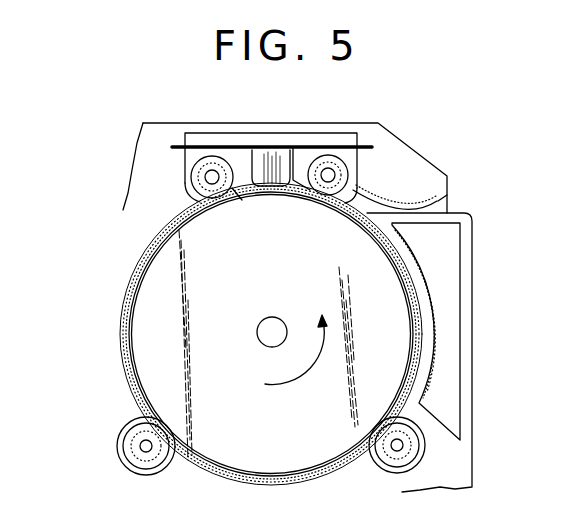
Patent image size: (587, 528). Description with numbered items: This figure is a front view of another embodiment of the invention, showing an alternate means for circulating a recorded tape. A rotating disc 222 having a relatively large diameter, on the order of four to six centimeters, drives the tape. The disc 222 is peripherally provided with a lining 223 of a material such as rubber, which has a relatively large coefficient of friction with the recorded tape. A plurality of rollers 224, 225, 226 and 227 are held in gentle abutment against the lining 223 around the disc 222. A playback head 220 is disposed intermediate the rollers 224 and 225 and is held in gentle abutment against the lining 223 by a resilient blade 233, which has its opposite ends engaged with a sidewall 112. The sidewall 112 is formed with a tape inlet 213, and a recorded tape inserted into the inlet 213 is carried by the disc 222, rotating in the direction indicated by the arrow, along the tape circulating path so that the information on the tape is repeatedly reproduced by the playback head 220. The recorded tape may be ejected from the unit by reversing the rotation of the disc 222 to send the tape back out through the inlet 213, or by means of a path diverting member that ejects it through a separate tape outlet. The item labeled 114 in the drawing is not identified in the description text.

The sidewall 112 is at (395, 143).
The photoconductive belt 114 is at (130, 280).
The tape inlet 213 is at (450, 203).
The playback head 220 is at (263, 180).
The rotating disc 222 is at (262, 468).
The lining 223 is at (128, 343).
The roller 224 is at (323, 195).
The roller 225 is at (213, 193).
The roller 226 is at (163, 460).
The roller 227 is at (380, 460).
The resilient blade 233 is at (242, 148).